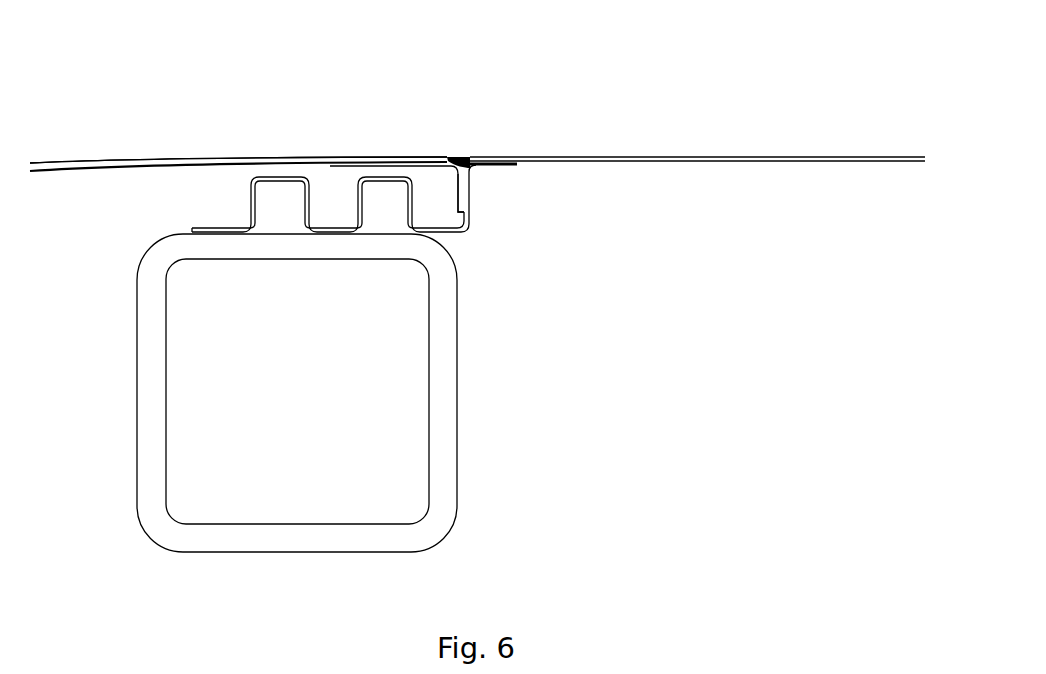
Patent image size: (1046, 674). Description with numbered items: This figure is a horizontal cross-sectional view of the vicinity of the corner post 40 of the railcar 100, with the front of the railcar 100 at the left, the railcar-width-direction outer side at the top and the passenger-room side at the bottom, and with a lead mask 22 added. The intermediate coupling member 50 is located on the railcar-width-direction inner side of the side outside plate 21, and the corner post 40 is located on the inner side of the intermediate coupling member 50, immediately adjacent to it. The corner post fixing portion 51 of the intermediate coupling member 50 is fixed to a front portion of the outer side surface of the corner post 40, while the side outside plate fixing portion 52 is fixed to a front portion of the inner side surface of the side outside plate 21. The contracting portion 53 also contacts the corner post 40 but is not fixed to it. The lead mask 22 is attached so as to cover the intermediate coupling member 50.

The railcar 100 is at (580, 90).
The side outside plate 21 is at (725, 155).
The lead mask 22 is at (330, 155).
The corner post 40 is at (438, 362).
The intermediate coupling member 50 is at (355, 249).
The corner post fixing portion 51 is at (227, 224).
The side outside plate fixing portion 52 is at (495, 168).
The contracting portion 53 is at (438, 193).